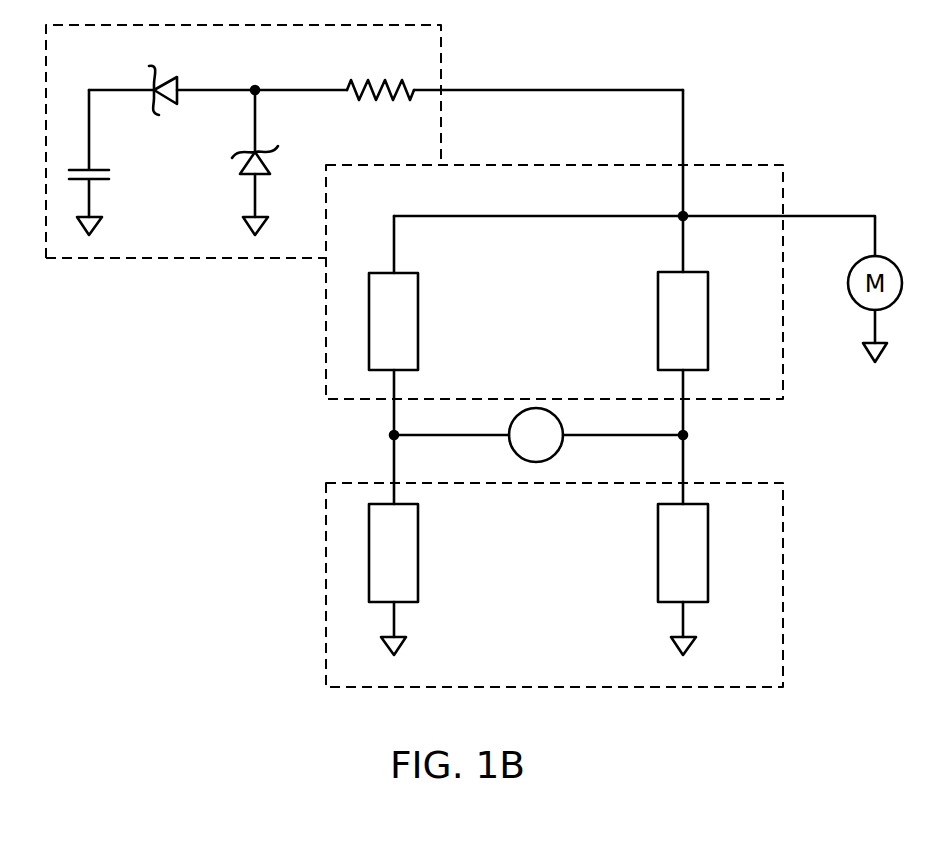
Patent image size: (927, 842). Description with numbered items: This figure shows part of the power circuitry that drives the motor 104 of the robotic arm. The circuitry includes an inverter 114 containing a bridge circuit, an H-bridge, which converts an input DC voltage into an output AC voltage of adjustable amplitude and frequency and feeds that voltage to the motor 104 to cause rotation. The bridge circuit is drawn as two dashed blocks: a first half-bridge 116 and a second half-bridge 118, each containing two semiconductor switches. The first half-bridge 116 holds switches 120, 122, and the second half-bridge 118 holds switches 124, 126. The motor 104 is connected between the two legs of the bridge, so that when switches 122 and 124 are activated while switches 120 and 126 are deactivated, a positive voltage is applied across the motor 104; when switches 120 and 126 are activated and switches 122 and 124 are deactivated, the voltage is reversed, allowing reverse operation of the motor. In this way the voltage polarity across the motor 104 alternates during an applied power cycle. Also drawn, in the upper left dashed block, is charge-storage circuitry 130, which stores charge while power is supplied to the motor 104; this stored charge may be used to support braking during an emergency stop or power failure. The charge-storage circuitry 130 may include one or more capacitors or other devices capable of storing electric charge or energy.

The motor 104 is at (538, 462).
The inverter 114 is at (553, 426).
The first half-bridge 116 is at (522, 300).
The second half-bridge 118 is at (522, 561).
The semiconductor switch 120 is at (418, 318).
The semiconductor switch 122 is at (708, 318).
The semiconductor switch 124 is at (418, 545).
The semiconductor switch 126 is at (708, 545).
The charge-storage circuitry 130 is at (72, 259).